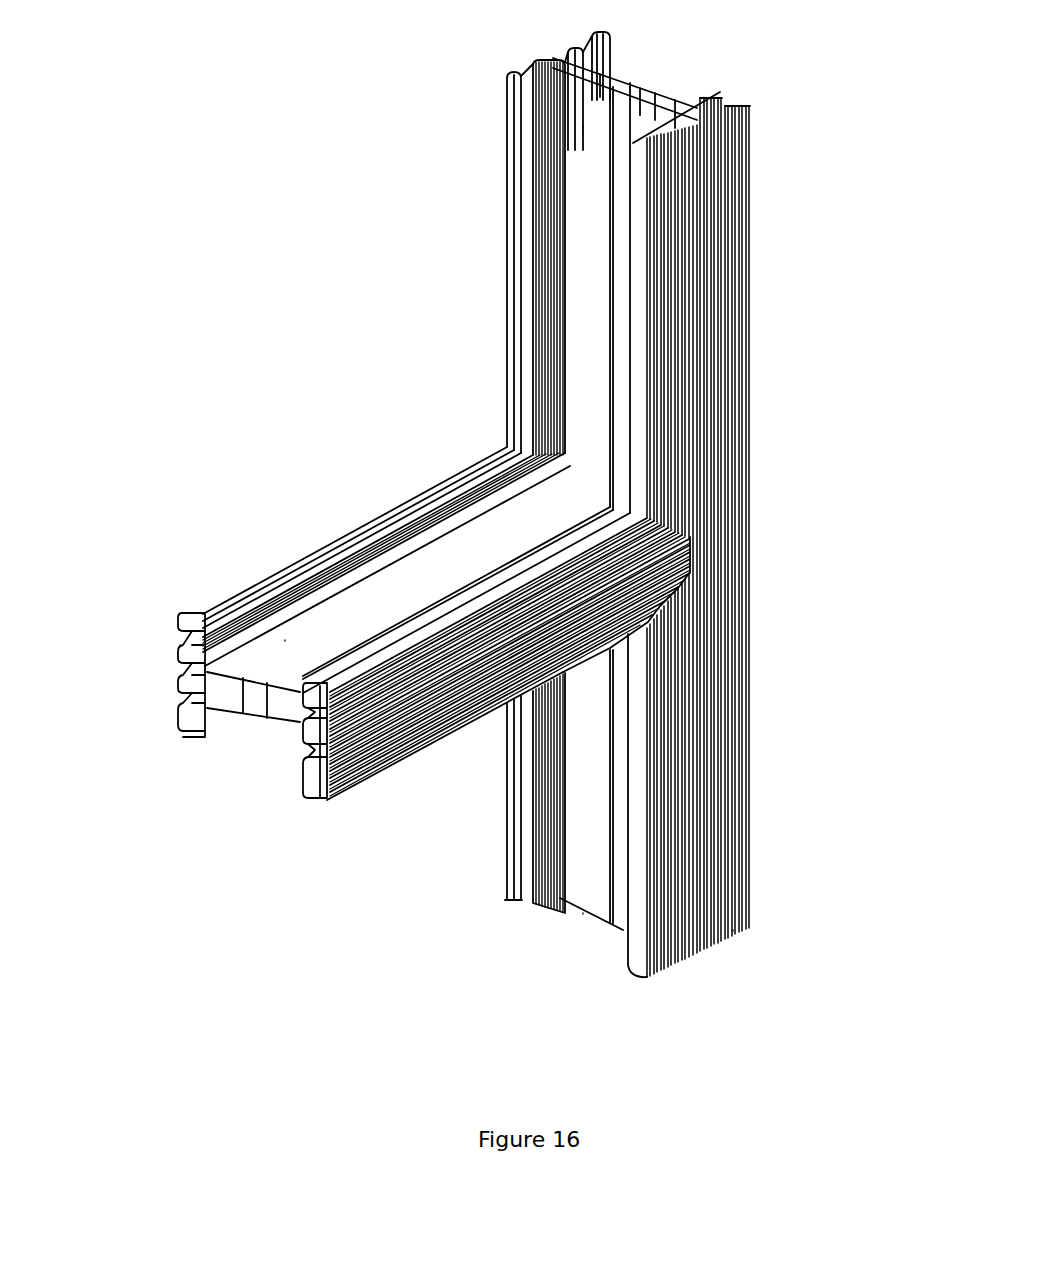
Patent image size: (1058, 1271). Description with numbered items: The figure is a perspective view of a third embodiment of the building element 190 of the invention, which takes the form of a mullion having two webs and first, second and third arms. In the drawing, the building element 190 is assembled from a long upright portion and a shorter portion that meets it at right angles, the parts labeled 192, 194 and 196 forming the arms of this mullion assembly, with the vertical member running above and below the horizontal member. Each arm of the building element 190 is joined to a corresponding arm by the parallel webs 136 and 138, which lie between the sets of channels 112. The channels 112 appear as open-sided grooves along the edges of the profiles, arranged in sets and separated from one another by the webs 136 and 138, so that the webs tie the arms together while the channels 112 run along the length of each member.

The channels 112 is at (180, 700).
The web 136 is at (583, 127).
The web 138 is at (628, 80).
The building element 190 is at (418, 364).
The transom 192 is at (405, 497).
The upper mullion section 194 is at (510, 195).
The lower mullion section 196 is at (510, 838).